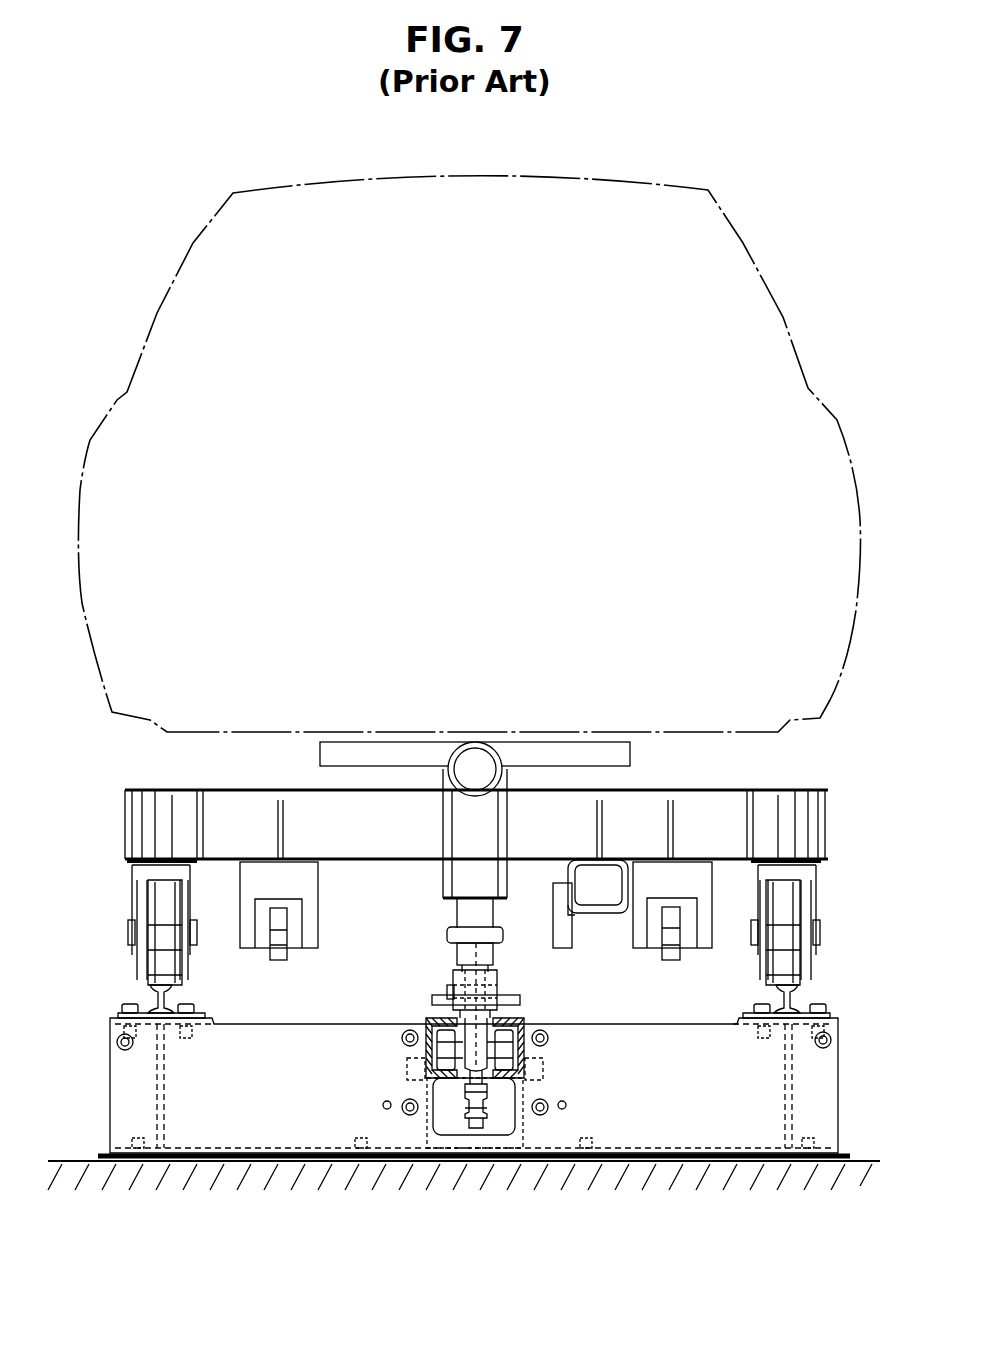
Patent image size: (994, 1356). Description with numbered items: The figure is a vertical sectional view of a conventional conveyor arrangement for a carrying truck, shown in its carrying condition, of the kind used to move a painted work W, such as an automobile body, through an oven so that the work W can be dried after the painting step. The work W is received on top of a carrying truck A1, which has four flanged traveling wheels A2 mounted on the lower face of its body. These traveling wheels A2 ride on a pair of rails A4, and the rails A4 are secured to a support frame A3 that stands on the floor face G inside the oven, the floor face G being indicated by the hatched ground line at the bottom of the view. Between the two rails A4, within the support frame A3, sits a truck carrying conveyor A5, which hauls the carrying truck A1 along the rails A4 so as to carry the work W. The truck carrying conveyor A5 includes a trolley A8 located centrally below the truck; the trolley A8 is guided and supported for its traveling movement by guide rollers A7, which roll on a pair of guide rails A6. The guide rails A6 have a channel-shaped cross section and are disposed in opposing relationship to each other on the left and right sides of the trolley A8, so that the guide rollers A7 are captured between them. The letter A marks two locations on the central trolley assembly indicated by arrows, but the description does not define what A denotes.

The work W is at (520, 172).
The carrying truck A1 is at (713, 790).
The flanged traveling wheels A2 is at (160, 960).
The support frame A3 is at (822, 1078).
The rails A4 is at (160, 996).
The truck carrying conveyor A5 is at (556, 1050).
The guide rails A6 is at (432, 1018).
The guide rollers A7 is at (446, 1045).
The trolley A8 is at (485, 1015).
The point A is at (472, 950).
The floor face G is at (850, 1160).